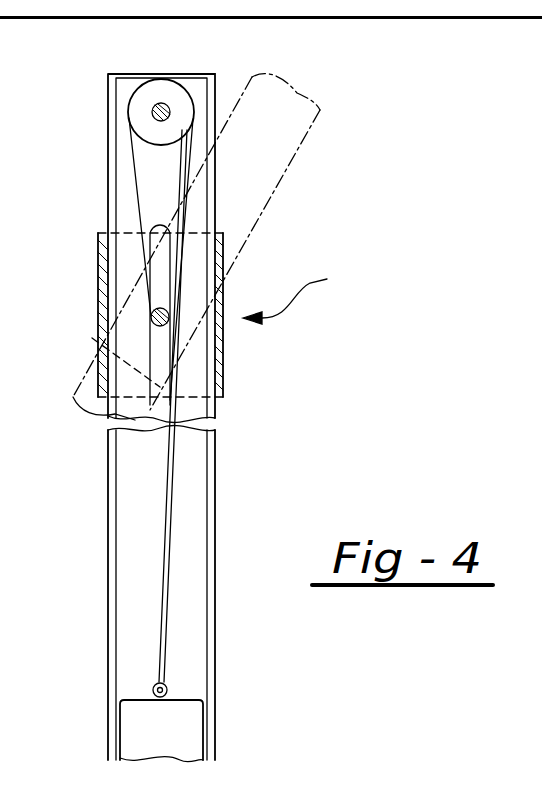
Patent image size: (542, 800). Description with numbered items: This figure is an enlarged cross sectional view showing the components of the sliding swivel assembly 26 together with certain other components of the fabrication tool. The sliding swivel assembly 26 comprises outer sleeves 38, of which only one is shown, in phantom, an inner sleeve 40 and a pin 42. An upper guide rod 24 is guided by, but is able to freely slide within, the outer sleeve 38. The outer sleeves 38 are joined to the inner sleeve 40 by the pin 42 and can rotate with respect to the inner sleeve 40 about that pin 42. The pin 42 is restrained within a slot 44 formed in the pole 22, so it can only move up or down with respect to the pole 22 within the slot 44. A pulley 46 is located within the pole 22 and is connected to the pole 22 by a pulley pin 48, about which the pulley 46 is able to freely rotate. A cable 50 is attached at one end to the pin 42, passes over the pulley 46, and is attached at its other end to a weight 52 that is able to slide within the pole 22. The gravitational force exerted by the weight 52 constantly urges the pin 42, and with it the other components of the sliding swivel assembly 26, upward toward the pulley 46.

The pole 22 is at (215, 502).
The upper guide rods 24 is at (287, 149).
The sliding swivel assembly 26 is at (303, 291).
The outer sleeve 38 is at (222, 285).
The inner sleeve 40 is at (98, 240).
The pin 42 is at (151, 318).
The slot 44 is at (150, 226).
The pulley 46 is at (180, 108).
The pulley pin 48 is at (152, 110).
The cable 50 is at (118, 160).
The weight 52 is at (177, 732).